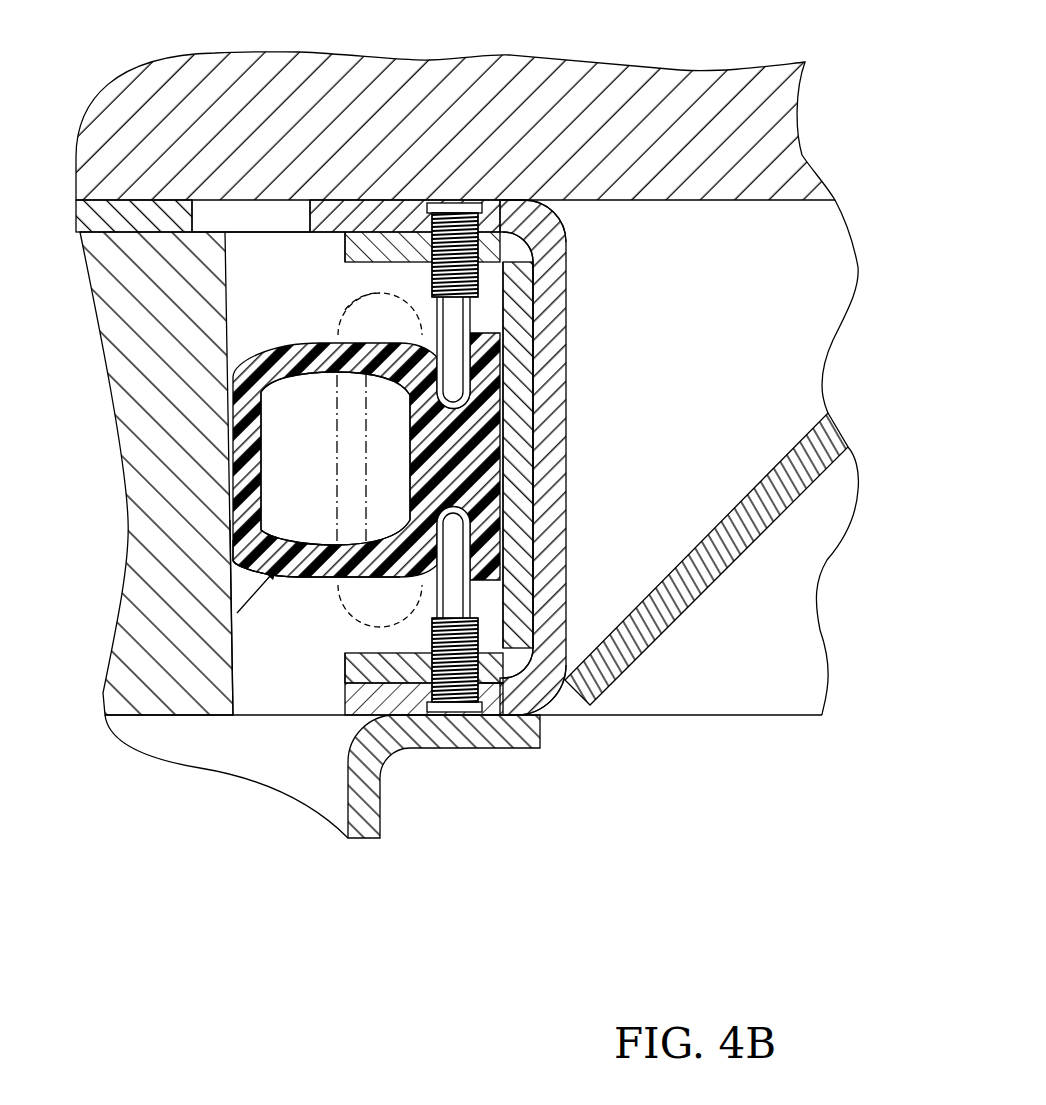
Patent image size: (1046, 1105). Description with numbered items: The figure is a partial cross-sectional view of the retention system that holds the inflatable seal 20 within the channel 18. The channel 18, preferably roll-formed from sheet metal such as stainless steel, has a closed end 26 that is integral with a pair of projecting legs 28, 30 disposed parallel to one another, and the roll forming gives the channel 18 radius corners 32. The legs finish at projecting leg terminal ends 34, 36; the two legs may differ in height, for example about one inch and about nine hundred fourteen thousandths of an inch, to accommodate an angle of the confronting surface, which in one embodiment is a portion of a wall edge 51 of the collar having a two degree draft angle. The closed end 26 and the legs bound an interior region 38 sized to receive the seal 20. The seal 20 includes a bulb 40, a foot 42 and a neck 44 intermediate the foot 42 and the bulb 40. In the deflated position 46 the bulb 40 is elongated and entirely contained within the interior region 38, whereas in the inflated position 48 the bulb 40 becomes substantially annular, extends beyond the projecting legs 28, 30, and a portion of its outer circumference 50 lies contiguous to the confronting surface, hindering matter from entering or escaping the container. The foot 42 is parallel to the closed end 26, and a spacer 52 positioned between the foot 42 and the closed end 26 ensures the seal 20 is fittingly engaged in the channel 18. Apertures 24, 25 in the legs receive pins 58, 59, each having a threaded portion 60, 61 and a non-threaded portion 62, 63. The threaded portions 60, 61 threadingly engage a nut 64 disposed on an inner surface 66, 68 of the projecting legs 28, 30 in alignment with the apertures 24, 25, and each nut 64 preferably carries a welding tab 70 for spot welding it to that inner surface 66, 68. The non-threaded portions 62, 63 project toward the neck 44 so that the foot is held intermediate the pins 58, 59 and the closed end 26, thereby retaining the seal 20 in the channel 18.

The channel 18 is at (547, 435).
The inflatable seal 20 is at (236, 372).
The aperture 24 is at (505, 185).
The aperture 25 is at (480, 687).
The closed end 26 is at (550, 505).
The projecting leg 28 is at (340, 215).
The projecting leg 30 is at (357, 708).
The radius corners 32 is at (547, 223).
The projecting leg terminal end 34 is at (277, 215).
The projecting leg terminal end 36 is at (345, 700).
The interior region 38 is at (270, 288).
The bulb 40 is at (233, 455).
The foot 42 is at (490, 400).
The neck 44 is at (465, 392).
The deflated position 46 is at (328, 422).
The inflated position 48 is at (233, 612).
The outer circumference 50 is at (233, 500).
The wall edge 51 is at (236, 565).
The spacer 52 is at (518, 470).
The pin 58 is at (452, 230).
The pin 59 is at (453, 690).
The threaded portion 60 is at (378, 253).
The threaded portion 61 is at (408, 717).
The non-threaded portion 62 is at (432, 345).
The non-threaded portion 63 is at (440, 583).
The nut 64 is at (558, 232).
The inner surface 66 is at (345, 247).
The inner surface 68 is at (345, 668).
The welding tab 70 is at (345, 257).